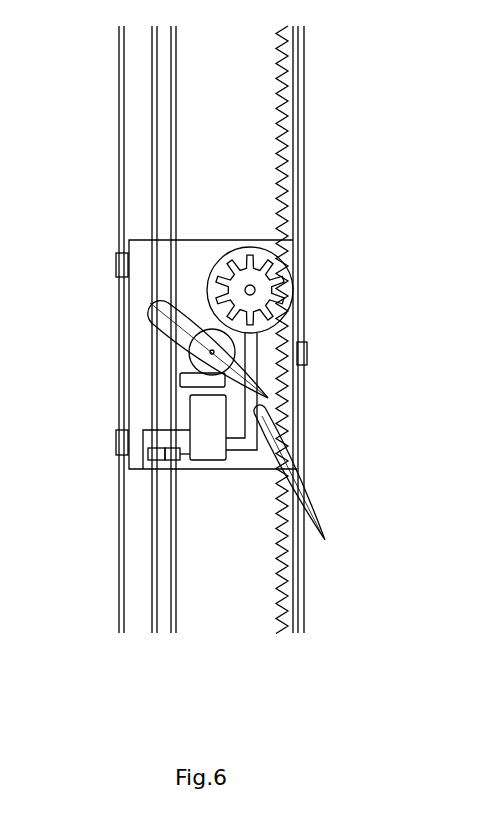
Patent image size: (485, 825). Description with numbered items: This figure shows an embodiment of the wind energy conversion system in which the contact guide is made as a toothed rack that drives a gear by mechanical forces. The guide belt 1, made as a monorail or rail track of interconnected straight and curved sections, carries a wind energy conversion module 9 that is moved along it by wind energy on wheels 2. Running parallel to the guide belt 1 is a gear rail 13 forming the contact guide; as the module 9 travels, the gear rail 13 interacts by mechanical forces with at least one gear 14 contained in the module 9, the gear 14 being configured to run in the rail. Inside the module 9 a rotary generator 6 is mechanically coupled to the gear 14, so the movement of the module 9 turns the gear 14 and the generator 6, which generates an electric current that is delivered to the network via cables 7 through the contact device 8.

The guide belt 1 is at (298, 157).
The wheels 2 is at (120, 440).
The rotary generator 6 is at (207, 438).
The cables 7 is at (173, 502).
The contact device 8 is at (173, 451).
The wind energy conversion module 9 is at (143, 257).
The gear rail 13 is at (290, 107).
The gear 14 is at (262, 278).